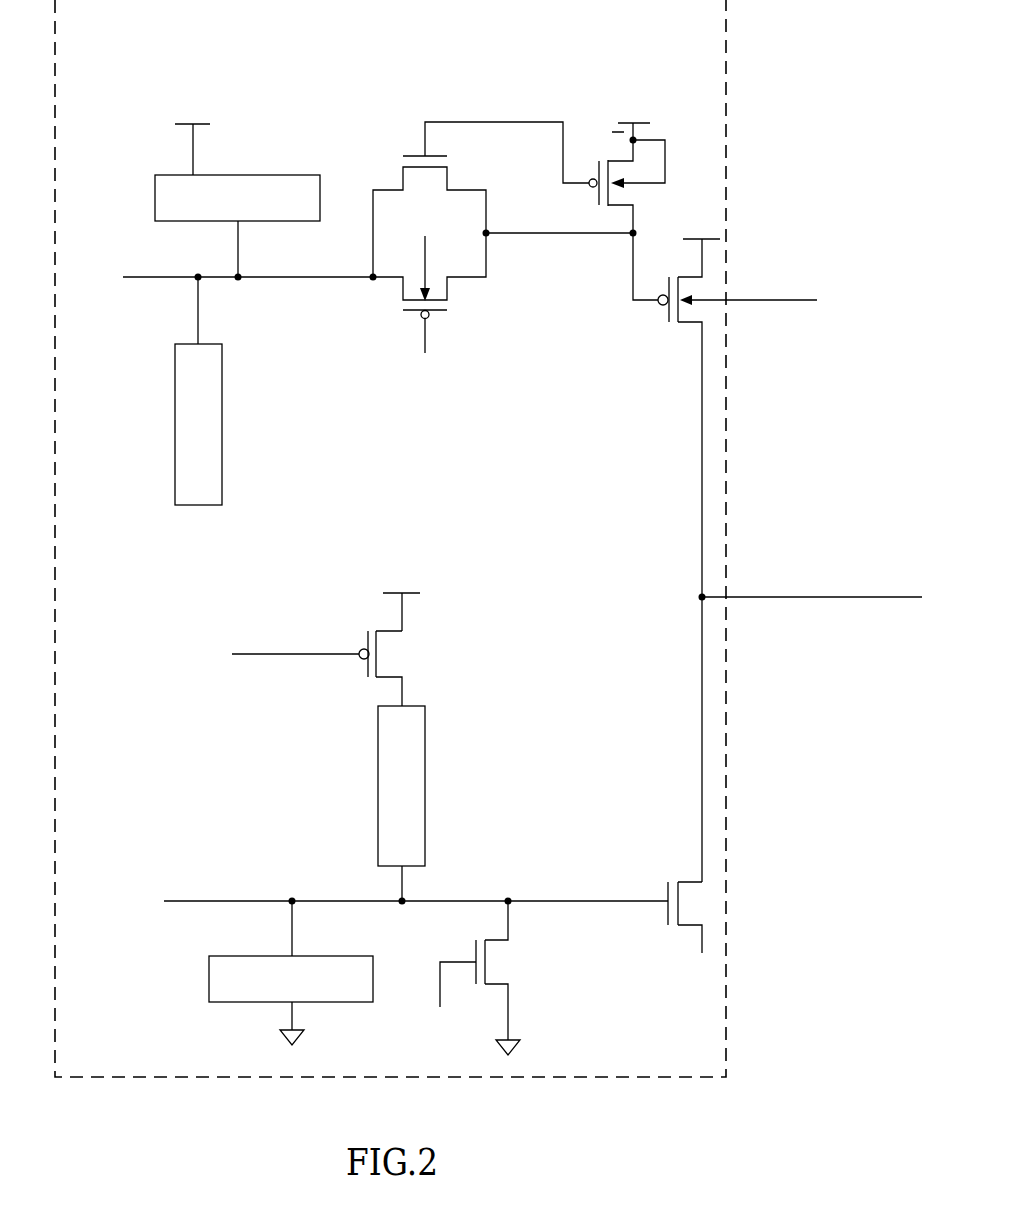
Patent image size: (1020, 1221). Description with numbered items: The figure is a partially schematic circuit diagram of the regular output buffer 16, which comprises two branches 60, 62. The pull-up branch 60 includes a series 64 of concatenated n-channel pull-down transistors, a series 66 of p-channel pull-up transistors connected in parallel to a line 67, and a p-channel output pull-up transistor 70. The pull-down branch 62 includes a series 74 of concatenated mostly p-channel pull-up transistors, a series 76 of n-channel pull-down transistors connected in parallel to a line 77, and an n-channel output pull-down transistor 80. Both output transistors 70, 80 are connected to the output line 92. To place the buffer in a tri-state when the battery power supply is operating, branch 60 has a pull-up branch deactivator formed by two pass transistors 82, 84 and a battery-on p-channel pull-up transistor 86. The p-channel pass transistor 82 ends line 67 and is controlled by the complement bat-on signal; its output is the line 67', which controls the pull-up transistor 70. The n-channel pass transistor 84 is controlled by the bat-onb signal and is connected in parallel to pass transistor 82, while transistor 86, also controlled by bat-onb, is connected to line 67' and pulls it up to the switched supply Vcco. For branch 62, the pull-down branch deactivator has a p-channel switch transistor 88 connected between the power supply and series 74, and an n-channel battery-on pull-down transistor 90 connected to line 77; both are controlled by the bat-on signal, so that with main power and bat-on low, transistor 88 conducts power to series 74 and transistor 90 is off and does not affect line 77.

The regular output buffer 16 is at (715, 50).
The branch 60 is at (90, 190).
The branch 62 is at (127, 908).
The series of concatenated n-channel pull-down transistors 64 is at (222, 426).
The series of p-channel pull-up transistors 66 is at (232, 175).
The line 67 is at (250, 296).
The line 67' is at (560, 281).
The p-channel output pull-up transistor 70 is at (695, 287).
The series of concatenated mostly p-channel pull-up transistors 74 is at (425, 757).
The series of n-channel pull-down transistors 76 is at (248, 1002).
The line 77 is at (628, 905).
The n-channel output pull-down transistor 80 is at (692, 907).
The pass transistor 82 is at (440, 287).
The pass transistor 84 is at (422, 178).
The battery on, p-channel pull-up transistor 86 is at (627, 193).
The switch transistor 88 is at (390, 655).
The battery-on, pull-down transistor 90 is at (495, 963).
The output line 92 is at (758, 595).